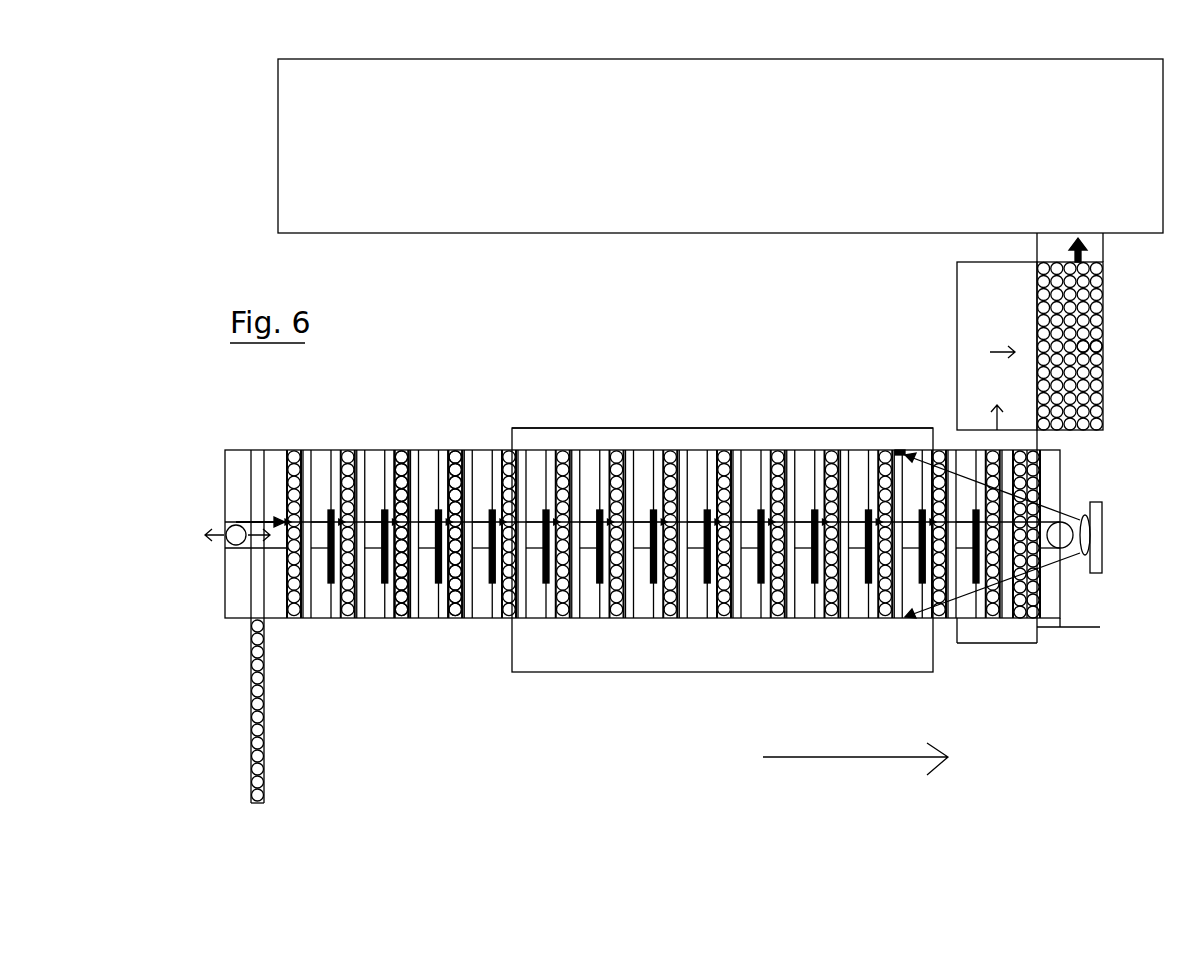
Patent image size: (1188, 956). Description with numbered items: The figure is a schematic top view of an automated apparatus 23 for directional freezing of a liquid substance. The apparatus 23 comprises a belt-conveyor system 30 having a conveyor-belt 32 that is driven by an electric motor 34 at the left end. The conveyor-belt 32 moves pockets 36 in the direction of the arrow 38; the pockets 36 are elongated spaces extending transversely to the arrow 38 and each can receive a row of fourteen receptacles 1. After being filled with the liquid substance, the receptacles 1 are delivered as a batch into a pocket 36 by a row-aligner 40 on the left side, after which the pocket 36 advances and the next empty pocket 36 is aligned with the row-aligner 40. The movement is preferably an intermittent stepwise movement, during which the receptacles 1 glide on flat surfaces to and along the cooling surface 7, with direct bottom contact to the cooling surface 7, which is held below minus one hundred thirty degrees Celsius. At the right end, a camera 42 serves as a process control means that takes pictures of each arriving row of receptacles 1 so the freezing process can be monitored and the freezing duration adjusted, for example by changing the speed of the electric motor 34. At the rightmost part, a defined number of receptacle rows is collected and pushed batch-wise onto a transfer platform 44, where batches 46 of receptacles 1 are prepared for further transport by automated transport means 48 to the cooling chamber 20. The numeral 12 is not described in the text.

The cooling chamber 20 is at (276, 158).
The apparatus 23 is at (720, 333).
The transport path 12 is at (690, 427).
The cooling surface 7 is at (578, 442).
The pockets 36 is at (257, 450).
The belt-conveyor system 30 is at (312, 538).
The conveyor-belt 32 is at (302, 522).
The electric motor 34 is at (233, 523).
The row-aligner 40 is at (250, 622).
The receptacles 1 is at (459, 621).
The transfer platform 44 is at (970, 312).
The automated transport means 48 is at (1090, 250).
The batches 46 is at (1103, 388).
The camera 42 is at (1100, 568).
The arrow 38 is at (855, 760).